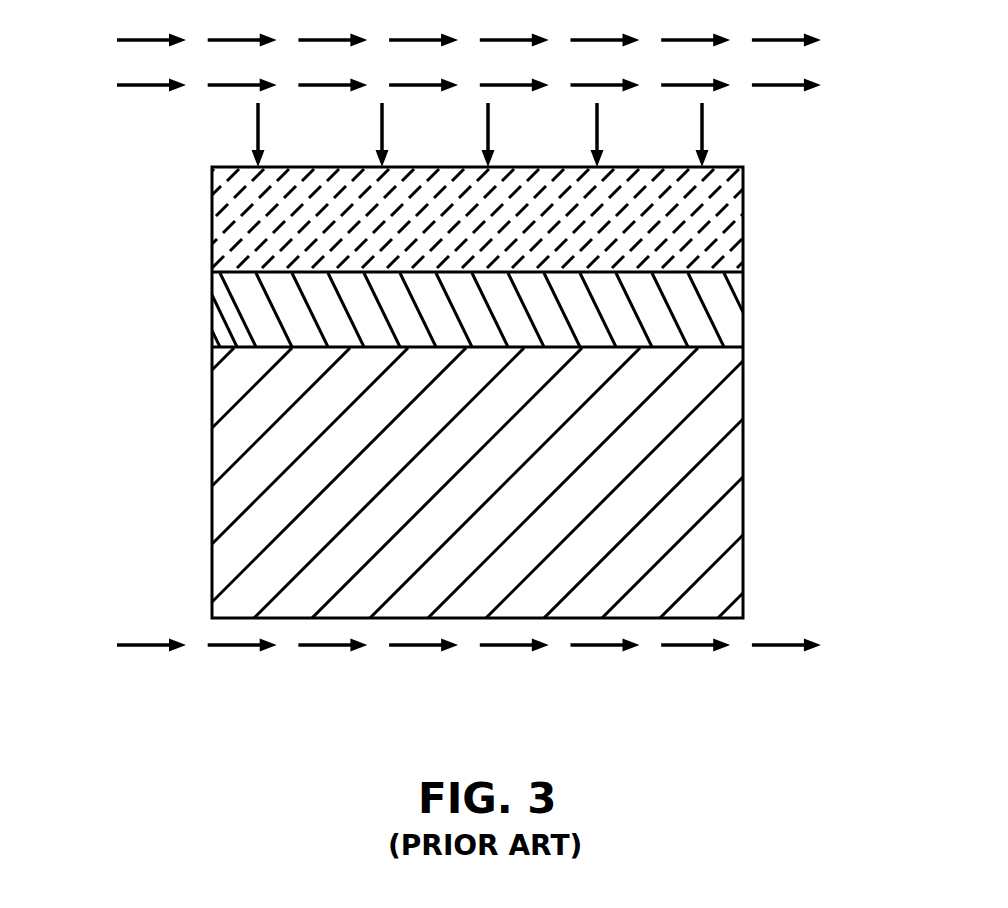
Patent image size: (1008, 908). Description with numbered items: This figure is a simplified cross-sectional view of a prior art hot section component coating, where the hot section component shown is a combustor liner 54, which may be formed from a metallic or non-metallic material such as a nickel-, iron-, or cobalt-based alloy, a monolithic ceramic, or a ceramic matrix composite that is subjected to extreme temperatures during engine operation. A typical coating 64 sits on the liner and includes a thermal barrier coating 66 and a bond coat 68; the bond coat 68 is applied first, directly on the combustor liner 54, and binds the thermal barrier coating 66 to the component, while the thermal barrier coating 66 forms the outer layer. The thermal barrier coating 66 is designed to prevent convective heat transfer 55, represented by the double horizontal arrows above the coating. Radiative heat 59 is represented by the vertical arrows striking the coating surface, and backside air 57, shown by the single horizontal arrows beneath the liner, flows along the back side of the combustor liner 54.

The combustor liner 54 is at (743, 493).
The convective heat transfer 55 is at (148, 84).
The backside air 57 is at (148, 642).
The radiative heat 59 is at (257, 126).
The coating 64 is at (112, 175).
The thermal barrier coating 66 is at (212, 228).
The bond coat 68 is at (743, 313).